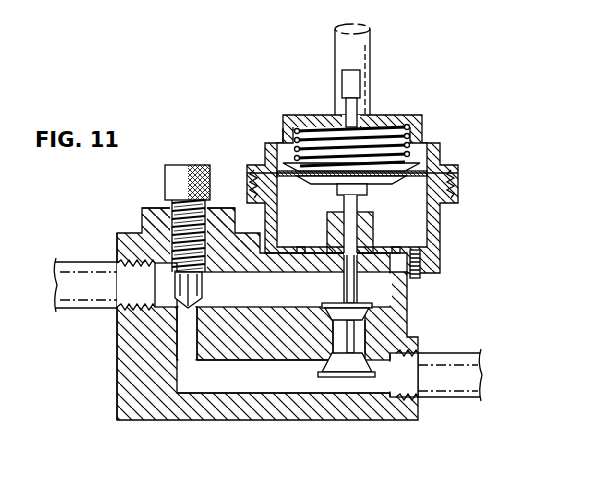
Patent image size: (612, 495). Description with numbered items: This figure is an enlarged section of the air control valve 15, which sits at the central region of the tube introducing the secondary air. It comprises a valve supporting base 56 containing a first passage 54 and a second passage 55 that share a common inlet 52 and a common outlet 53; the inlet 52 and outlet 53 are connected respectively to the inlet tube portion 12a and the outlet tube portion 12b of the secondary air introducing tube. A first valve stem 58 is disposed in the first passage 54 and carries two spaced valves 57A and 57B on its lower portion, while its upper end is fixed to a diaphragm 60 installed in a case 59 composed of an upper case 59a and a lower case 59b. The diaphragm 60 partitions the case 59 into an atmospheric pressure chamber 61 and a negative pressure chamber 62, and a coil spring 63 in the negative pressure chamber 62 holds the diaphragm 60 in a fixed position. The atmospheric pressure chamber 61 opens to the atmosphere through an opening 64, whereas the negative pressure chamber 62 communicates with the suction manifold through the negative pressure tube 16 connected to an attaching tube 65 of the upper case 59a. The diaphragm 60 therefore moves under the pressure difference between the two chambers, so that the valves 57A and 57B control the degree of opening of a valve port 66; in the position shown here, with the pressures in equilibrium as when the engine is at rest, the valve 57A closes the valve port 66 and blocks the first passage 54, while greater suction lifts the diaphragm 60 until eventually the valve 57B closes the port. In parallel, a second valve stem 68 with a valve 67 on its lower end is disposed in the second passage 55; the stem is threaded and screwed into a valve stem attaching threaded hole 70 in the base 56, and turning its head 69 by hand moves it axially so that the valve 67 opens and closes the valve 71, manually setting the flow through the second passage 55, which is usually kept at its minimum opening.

The air control valve 15 is at (386, 151).
The negative pressure tube 16 is at (335, 50).
The inlet tube portion 12a is at (78, 258).
The outlet tube portion 12b is at (480, 400).
The common inlet 52 is at (135, 290).
The common outlet 53 is at (408, 382).
The first passage 54 is at (222, 243).
The second passage 55 is at (283, 372).
The valve supporting base 56 is at (112, 412).
The valve 57A is at (346, 308).
The valve 57B is at (352, 378).
The first valve stem 58 is at (356, 292).
The case 59 is at (378, 179).
The upper case 59a is at (424, 130).
The lower case 59b is at (432, 222).
The diaphragm 60 is at (393, 178).
The atmospheric pressure chamber 61 is at (420, 255).
The negative pressure chamber 62 is at (372, 148).
The coil spring 63 is at (290, 130).
The opening 64 is at (272, 225).
The attaching tube 65 is at (357, 90).
The valve port 66 is at (362, 337).
The valve 67 is at (188, 306).
The second valve stem 68 is at (176, 212).
The head 69 is at (182, 170).
The valve stem attaching threaded hole 70 is at (175, 215).
The valve 71 is at (188, 350).